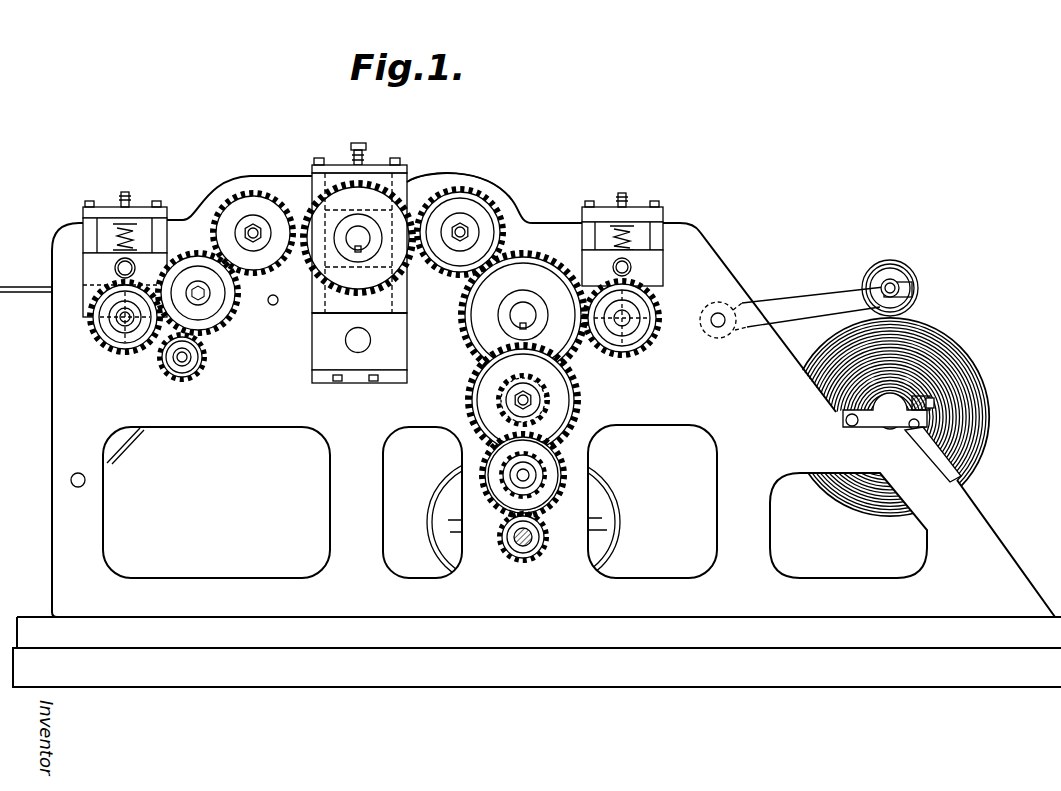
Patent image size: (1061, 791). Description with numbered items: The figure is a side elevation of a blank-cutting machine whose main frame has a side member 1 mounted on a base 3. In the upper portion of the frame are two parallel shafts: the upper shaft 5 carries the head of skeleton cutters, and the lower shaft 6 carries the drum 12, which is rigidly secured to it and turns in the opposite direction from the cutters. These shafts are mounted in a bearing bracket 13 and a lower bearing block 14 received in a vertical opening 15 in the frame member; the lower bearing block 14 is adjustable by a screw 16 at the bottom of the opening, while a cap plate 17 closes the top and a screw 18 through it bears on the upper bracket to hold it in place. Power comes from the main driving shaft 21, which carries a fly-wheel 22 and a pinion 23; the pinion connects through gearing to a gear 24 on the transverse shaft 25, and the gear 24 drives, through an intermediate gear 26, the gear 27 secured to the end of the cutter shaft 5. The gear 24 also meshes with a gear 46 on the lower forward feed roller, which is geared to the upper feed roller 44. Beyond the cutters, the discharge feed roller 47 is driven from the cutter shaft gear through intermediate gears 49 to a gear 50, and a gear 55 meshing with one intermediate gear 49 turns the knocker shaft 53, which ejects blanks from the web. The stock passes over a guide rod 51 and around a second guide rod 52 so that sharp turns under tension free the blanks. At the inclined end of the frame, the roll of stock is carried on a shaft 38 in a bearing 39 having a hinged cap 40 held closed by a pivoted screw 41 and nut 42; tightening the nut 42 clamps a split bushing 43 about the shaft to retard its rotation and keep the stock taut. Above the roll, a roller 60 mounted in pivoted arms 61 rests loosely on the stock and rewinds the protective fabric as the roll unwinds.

The side member 1 is at (75, 420).
The base 3 is at (690, 665).
The upper shaft 5 is at (358, 243).
The lower shaft 6 is at (365, 338).
The drum 12 is at (318, 341).
The bearing bracket 13 is at (397, 230).
The lower bearing block 14 is at (328, 345).
The vertical opening 15 is at (390, 302).
The screw 16 is at (362, 385).
The cap plate 17 is at (330, 165).
The screw 18 is at (370, 143).
The main driving shaft 21 is at (520, 547).
The fly-wheel 22 is at (605, 538).
The pinion 23 is at (537, 543).
The gear 24 is at (560, 337).
The shaft 25 is at (520, 313).
The intermediate gear 26 is at (485, 220).
The gear 27 is at (410, 176).
The shaft 38 is at (887, 427).
The bearing 39 is at (908, 433).
The hinged cap 40 is at (843, 405).
The screw 41 is at (913, 397).
The nut 42 is at (923, 404).
The split bushing 43 is at (870, 430).
The upper feed roller 44 is at (632, 247).
The gear 46 is at (645, 332).
The feed roller 47 is at (125, 254).
The intermediate gear 49 is at (192, 267).
The gear 50 is at (117, 337).
The guide rod 51 is at (278, 302).
The guide rod 52 is at (78, 487).
The knocker shaft 53 is at (197, 353).
The gear 55 is at (200, 372).
The roller 60 is at (895, 283).
The arm 61 is at (787, 310).